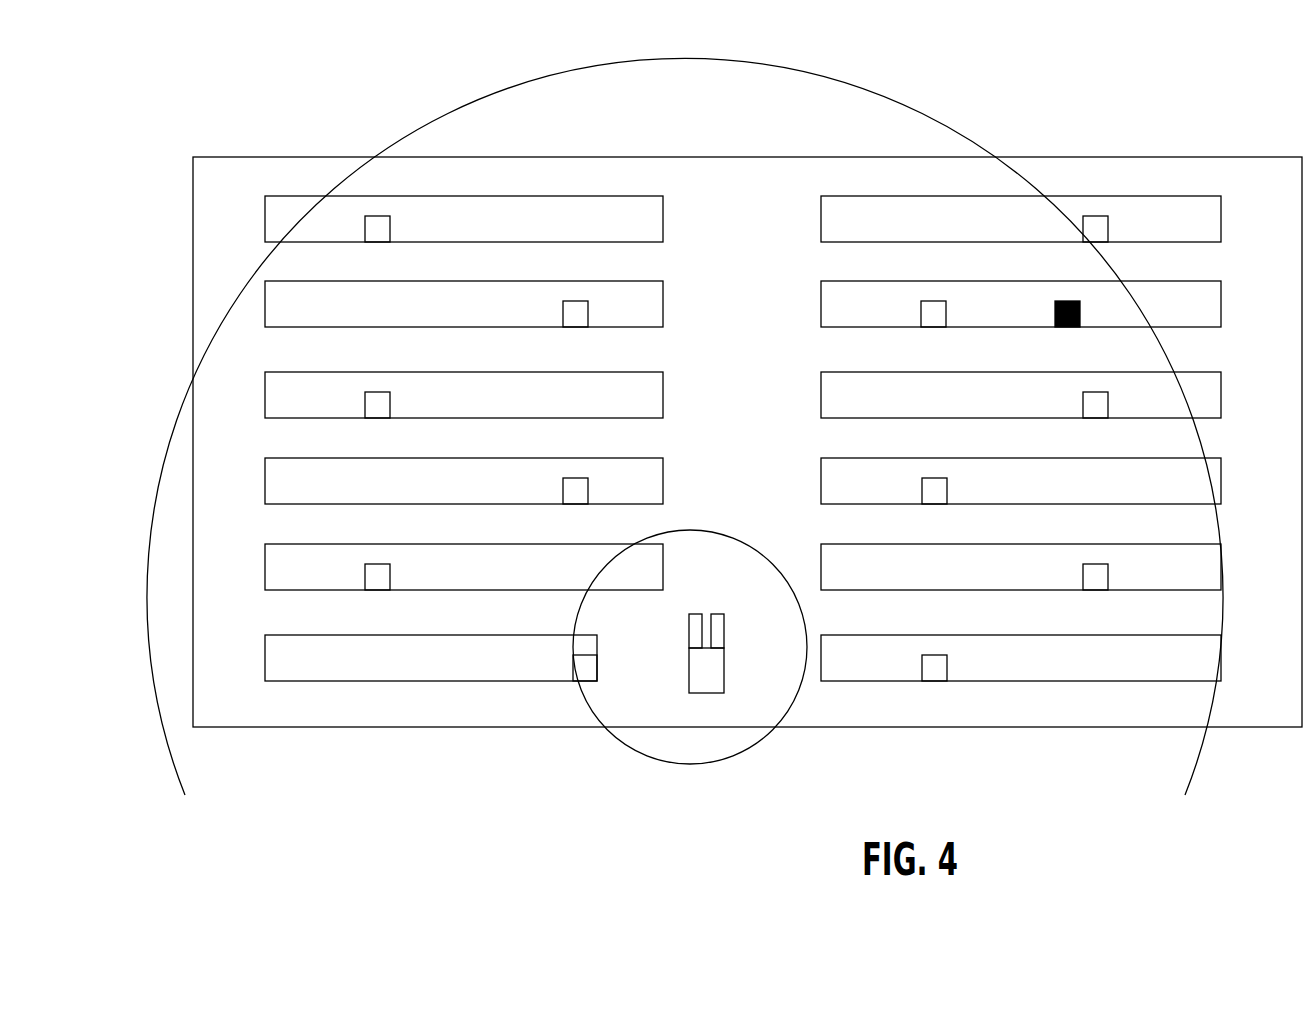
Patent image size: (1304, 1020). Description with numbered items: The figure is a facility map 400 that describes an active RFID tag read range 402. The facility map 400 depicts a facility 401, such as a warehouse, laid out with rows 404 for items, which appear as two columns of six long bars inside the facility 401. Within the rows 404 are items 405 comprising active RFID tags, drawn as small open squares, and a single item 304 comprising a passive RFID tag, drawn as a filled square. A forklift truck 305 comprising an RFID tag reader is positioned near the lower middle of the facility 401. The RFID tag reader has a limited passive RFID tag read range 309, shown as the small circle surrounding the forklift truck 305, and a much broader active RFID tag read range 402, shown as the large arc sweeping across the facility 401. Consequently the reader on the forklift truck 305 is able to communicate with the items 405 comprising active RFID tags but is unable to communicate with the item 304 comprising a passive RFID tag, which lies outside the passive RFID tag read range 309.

The facility map 400 is at (747, 394).
The facility 401 is at (1175, 157).
The active RFID tag read range 402 is at (953, 132).
The rows 404 is at (664, 220).
The items comprising active RFID tags 405 is at (379, 216).
The item comprising a passive RFID tag 304 is at (1068, 301).
The forklift truck 305 is at (724, 668).
The passive RFID tag read range 309 is at (727, 762).